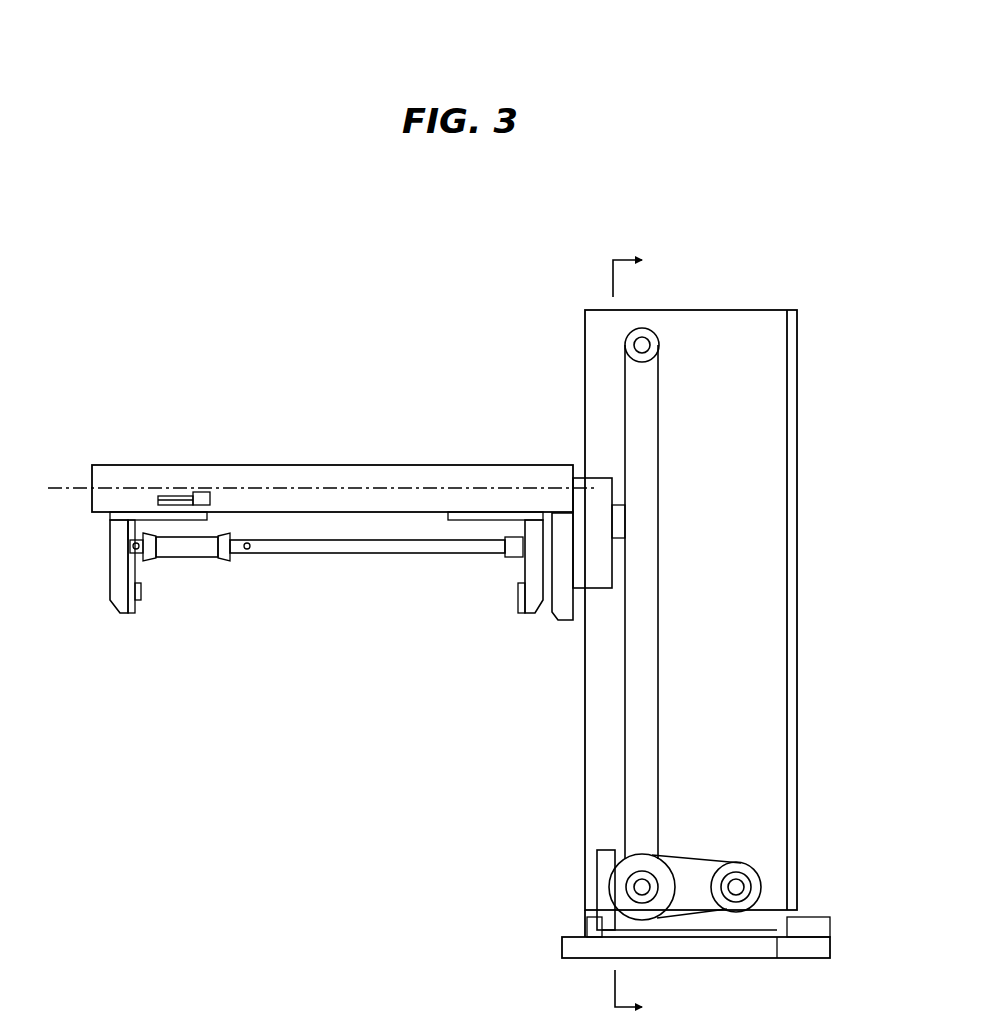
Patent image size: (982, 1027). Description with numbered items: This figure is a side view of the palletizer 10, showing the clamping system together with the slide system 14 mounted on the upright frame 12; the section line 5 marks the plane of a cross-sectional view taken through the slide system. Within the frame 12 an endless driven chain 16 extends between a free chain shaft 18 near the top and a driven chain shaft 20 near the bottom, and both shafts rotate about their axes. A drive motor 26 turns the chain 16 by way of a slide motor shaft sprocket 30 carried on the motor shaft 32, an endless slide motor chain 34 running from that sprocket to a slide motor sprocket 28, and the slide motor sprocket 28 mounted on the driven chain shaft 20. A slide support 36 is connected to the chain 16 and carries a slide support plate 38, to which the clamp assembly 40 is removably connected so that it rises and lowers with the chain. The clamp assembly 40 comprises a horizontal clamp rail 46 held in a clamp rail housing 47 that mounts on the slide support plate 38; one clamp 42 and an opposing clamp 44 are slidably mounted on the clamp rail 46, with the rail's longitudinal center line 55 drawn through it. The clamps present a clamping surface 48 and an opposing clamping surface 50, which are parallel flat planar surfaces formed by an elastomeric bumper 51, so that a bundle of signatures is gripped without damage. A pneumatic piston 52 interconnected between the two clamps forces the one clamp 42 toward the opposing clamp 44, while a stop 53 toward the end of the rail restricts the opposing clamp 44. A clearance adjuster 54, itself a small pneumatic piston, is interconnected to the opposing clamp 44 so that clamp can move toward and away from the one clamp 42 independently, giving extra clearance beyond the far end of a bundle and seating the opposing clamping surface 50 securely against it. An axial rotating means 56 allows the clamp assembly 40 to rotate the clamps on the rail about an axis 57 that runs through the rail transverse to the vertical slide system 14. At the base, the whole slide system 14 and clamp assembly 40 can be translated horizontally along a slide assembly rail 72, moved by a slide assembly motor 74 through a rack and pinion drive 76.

The section line 5- 5 is at (639, 636).
The palletizer 10 is at (343, 298).
The frame 12 is at (797, 638).
The slide system 14 is at (545, 752).
The driven chain 16 is at (658, 683).
The free chain shaft 18 is at (630, 342).
The driven chain shaft 20 is at (645, 890).
The drive motor 26 is at (740, 862).
The slide motor sprocket 28 is at (628, 856).
The slide motor shaft sprocket 30 is at (745, 895).
The motor shaft 32 is at (736, 890).
The slide motor chain 34 is at (690, 858).
The slide support 36 is at (620, 522).
The slide support plate 38 is at (560, 490).
The clamp assembly 40 is at (150, 410).
The one clamp 42 is at (530, 615).
The opposing clamp 44 is at (118, 613).
The clamp rail 46 is at (317, 505).
The clamp rail housing 47 is at (512, 490).
The one clamping surface 48 is at (518, 608).
The opposing clamping surface 50 is at (136, 605).
The elastomeric bumper 51 is at (137, 593).
The pneumatic piston 52 is at (220, 560).
The stop 53 is at (122, 528).
The clearance adjuster 54 is at (213, 492).
The arm centerline axis 55 is at (70, 488).
The axial rotating means 56 is at (578, 622).
The axis 57 is at (415, 490).
The slide assembly rail 72 is at (797, 947).
The slide assembly motor 74 is at (597, 882).
The rack and pinion drive 76 is at (595, 933).